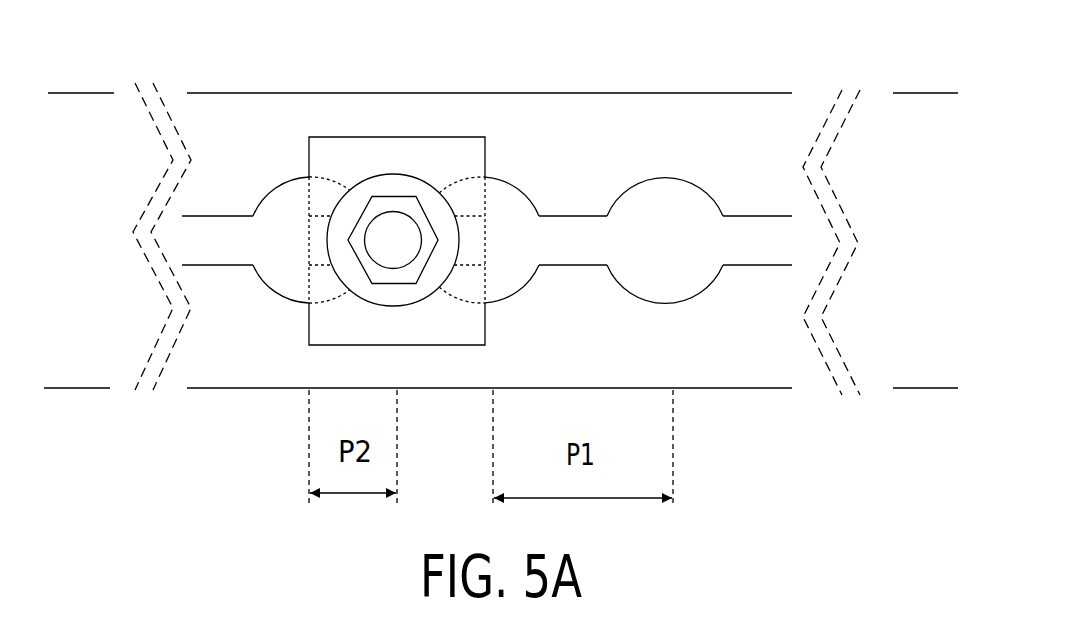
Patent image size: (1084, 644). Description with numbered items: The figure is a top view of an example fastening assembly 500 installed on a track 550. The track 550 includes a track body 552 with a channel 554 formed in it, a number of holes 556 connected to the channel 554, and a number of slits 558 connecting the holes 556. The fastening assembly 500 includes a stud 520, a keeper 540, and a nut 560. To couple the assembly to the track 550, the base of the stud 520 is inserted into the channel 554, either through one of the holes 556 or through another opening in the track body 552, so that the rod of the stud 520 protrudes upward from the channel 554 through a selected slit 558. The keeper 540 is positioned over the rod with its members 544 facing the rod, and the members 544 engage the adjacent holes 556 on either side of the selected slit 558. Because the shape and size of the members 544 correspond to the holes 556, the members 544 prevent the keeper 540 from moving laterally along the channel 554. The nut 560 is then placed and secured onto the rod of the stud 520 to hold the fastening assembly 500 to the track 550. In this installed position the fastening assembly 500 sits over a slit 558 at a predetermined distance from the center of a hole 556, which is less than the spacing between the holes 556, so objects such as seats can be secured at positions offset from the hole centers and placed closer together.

The fastening assembly 500 is at (423, 196).
The stud 520 is at (394, 239).
The keeper 540 is at (402, 148).
The members 544 is at (322, 198).
The track 550 is at (949, 64).
The track body 552 is at (728, 347).
The channel 554 is at (793, 239).
The holes 556 is at (508, 271).
The slits 558 is at (578, 240).
The nut 560 is at (383, 273).